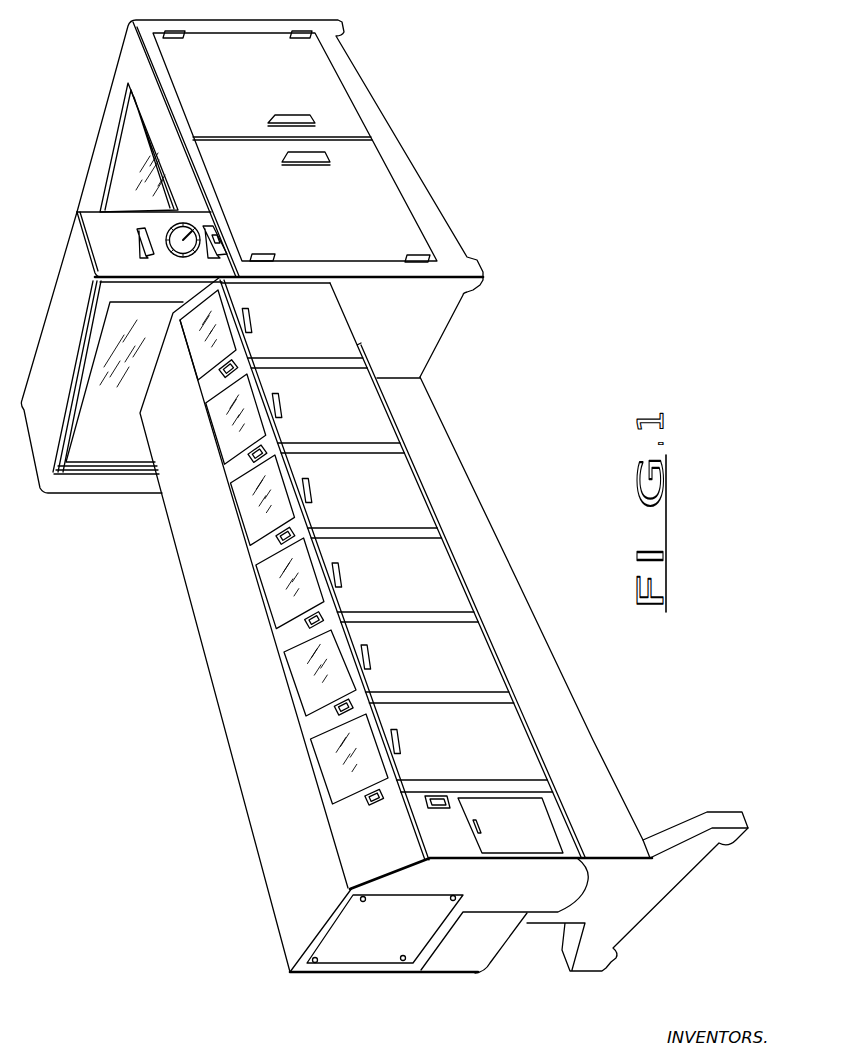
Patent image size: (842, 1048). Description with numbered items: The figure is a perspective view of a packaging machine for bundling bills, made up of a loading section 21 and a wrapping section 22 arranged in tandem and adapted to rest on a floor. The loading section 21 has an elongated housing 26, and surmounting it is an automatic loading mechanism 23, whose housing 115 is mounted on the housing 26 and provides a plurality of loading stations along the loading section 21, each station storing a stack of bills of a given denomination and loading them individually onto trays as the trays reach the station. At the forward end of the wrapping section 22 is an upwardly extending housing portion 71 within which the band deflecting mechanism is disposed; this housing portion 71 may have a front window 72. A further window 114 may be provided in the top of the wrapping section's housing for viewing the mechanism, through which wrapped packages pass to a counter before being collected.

The loading section 21 is at (526, 565).
The wrapping section 22 is at (428, 170).
The automatic loading mechanism 23 is at (219, 735).
The housing 26 is at (458, 960).
The housing portion 71 is at (80, 494).
The front window 72 is at (117, 438).
The window 114 is at (123, 150).
The housing 115 is at (264, 850).